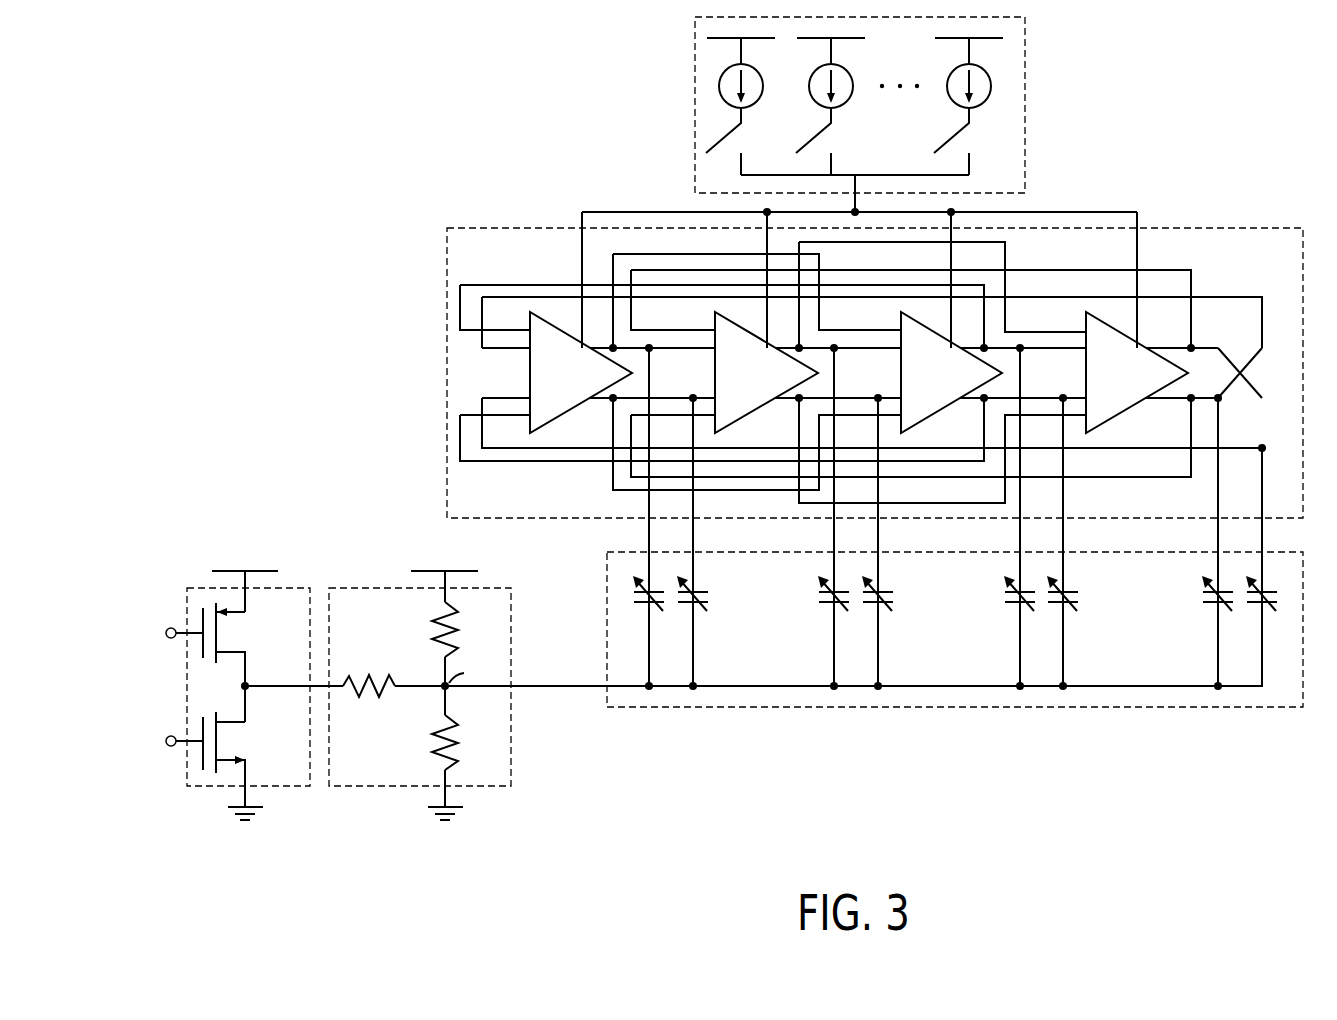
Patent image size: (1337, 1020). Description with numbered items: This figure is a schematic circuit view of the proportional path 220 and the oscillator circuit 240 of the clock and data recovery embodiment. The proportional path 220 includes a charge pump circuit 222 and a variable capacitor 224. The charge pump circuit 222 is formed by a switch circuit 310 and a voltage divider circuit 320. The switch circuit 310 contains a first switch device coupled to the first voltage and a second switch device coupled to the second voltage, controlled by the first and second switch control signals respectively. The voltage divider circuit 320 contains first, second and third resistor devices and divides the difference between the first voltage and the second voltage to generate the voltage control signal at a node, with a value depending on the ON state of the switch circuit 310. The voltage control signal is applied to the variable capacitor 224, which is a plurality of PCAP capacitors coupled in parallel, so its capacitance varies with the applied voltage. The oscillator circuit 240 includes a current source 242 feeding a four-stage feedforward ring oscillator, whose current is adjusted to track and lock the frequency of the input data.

The proportional path 220 is at (258, 41).
The charge pump circuit 222 is at (388, 898).
The variable capacitor 224 is at (1248, 706).
The oscillator circuit 240 is at (1192, 47).
The current source 242 is at (1027, 88).
The switch circuit 310 is at (300, 787).
The voltage divider circuit 320 is at (355, 787).